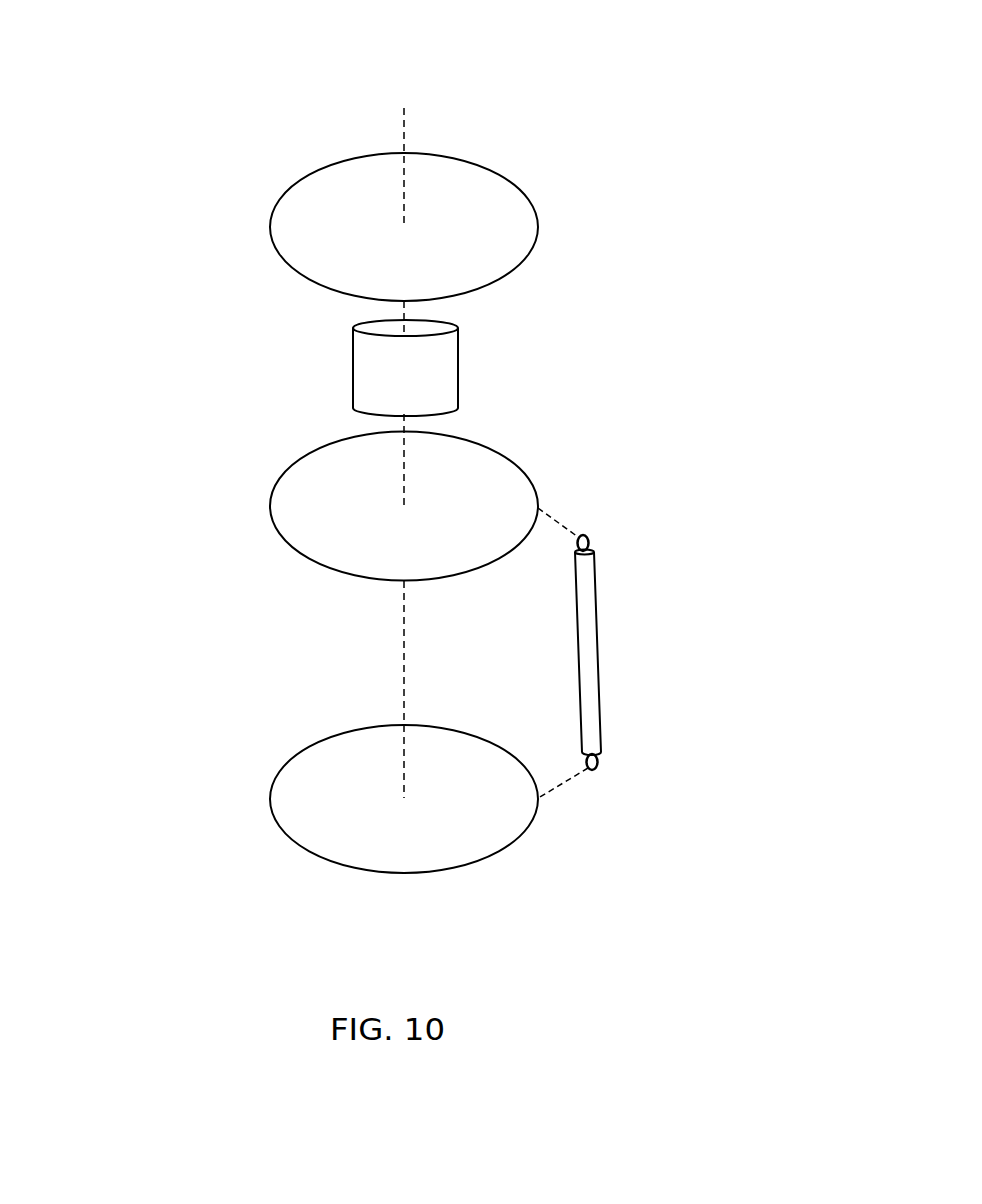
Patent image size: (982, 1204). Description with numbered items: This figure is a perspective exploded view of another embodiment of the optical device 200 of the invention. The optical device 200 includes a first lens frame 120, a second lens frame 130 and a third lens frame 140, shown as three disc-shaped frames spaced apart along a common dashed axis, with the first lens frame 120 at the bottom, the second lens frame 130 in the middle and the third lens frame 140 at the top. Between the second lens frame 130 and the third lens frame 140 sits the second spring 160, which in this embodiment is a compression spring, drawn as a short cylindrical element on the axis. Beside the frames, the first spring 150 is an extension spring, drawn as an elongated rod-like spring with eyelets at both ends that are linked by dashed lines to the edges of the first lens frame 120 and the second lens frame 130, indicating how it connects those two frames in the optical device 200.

The optical device 200 is at (442, 28).
The first lens frame 120 is at (270, 799).
The second lens frame 130 is at (270, 506).
The third lens frame 140 is at (270, 227).
The first spring 150 is at (597, 648).
The second spring 160 is at (417, 373).